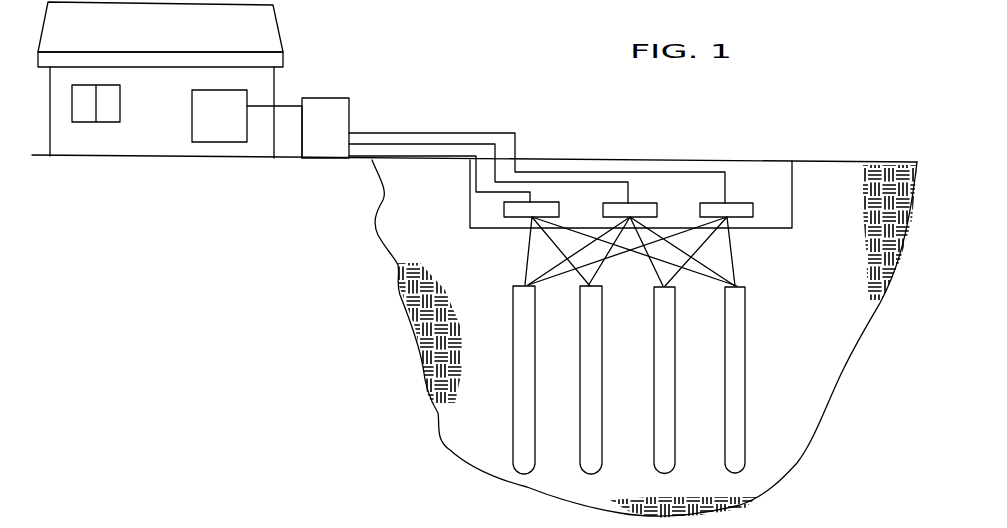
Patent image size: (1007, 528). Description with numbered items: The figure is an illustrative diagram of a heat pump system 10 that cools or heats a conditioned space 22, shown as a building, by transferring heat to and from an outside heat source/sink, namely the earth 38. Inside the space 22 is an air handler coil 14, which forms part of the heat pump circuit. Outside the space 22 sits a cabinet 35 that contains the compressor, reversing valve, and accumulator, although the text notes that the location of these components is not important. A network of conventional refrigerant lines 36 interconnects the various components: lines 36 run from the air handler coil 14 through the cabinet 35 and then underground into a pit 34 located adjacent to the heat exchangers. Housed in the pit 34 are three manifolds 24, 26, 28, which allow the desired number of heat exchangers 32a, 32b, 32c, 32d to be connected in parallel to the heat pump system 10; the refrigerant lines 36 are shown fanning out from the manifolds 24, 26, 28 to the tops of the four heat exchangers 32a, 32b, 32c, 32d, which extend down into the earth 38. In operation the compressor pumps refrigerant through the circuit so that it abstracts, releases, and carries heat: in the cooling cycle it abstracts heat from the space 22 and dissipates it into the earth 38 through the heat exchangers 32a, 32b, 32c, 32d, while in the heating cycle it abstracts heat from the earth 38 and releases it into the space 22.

The heat pump system 10 is at (791, 70).
The air handler coil 14 is at (218, 146).
The space 22 is at (160, 90).
The manifold 24 is at (550, 202).
The manifold 26 is at (647, 203).
The manifold 28 is at (743, 203).
The heat exchanger 32a is at (513, 383).
The heat exchanger 32b is at (580, 343).
The heat exchanger 32c is at (675, 383).
The heat exchanger 32d is at (745, 387).
The pit 34 is at (792, 193).
The cabinet 35 is at (352, 92).
The refrigerant lines 36 is at (288, 99).
The earth 38 is at (845, 323).